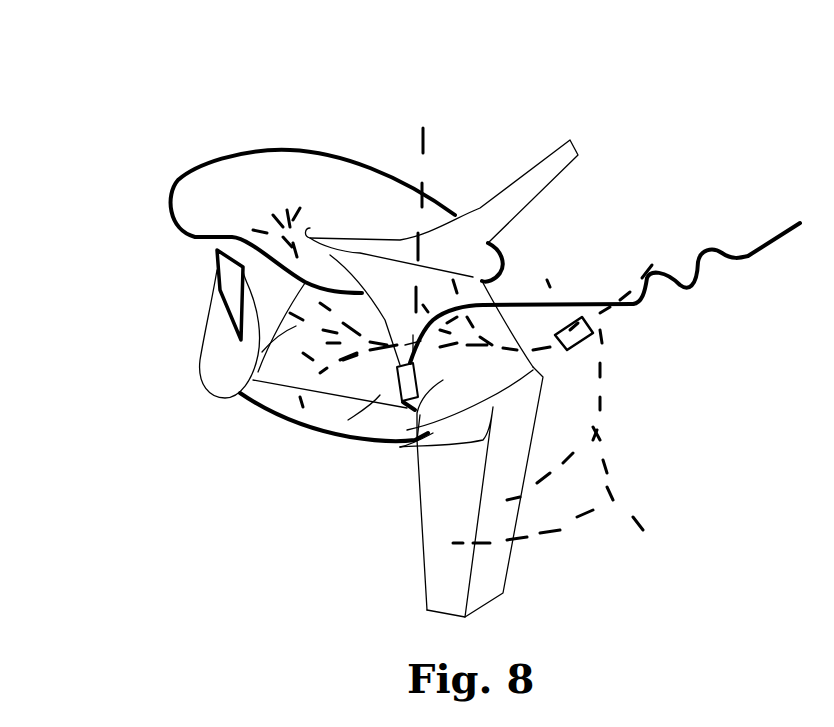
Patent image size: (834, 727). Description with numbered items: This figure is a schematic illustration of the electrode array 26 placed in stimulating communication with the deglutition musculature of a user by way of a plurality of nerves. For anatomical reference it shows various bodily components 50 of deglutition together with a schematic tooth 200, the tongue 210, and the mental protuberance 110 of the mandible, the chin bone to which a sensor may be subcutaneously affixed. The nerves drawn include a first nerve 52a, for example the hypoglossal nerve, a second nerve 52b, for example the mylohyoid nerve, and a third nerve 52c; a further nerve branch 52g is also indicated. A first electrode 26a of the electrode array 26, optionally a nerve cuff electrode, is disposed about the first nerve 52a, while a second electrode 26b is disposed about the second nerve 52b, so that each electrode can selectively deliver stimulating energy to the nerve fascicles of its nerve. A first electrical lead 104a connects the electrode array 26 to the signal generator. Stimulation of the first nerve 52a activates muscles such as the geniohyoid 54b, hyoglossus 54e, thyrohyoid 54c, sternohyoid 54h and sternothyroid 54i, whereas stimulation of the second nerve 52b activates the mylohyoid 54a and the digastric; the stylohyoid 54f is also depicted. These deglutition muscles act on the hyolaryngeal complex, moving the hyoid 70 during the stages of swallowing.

The electrode array 26 is at (549, 280).
The first electrode 26a is at (587, 350).
The second electrode 26b is at (395, 388).
The bodily components 50 is at (250, 537).
The first nerve 52a is at (623, 293).
The second nerve 52b is at (422, 147).
The third nerve 52c is at (600, 403).
The reference line 52g is at (240, 396).
The first muscle 54a is at (283, 402).
The second muscle 54b is at (348, 420).
The third muscle 54c is at (513, 453).
The fifth muscle 54e is at (420, 441).
The sixth muscle 54f is at (523, 180).
The eighth muscle 54h is at (438, 567).
The ninth muscle 54i is at (493, 567).
The hyoid 70 is at (422, 470).
The first electrical lead 104a is at (698, 287).
The mental protuberance 110 is at (203, 368).
The tooth 200 is at (215, 265).
The tongue 210 is at (187, 210).